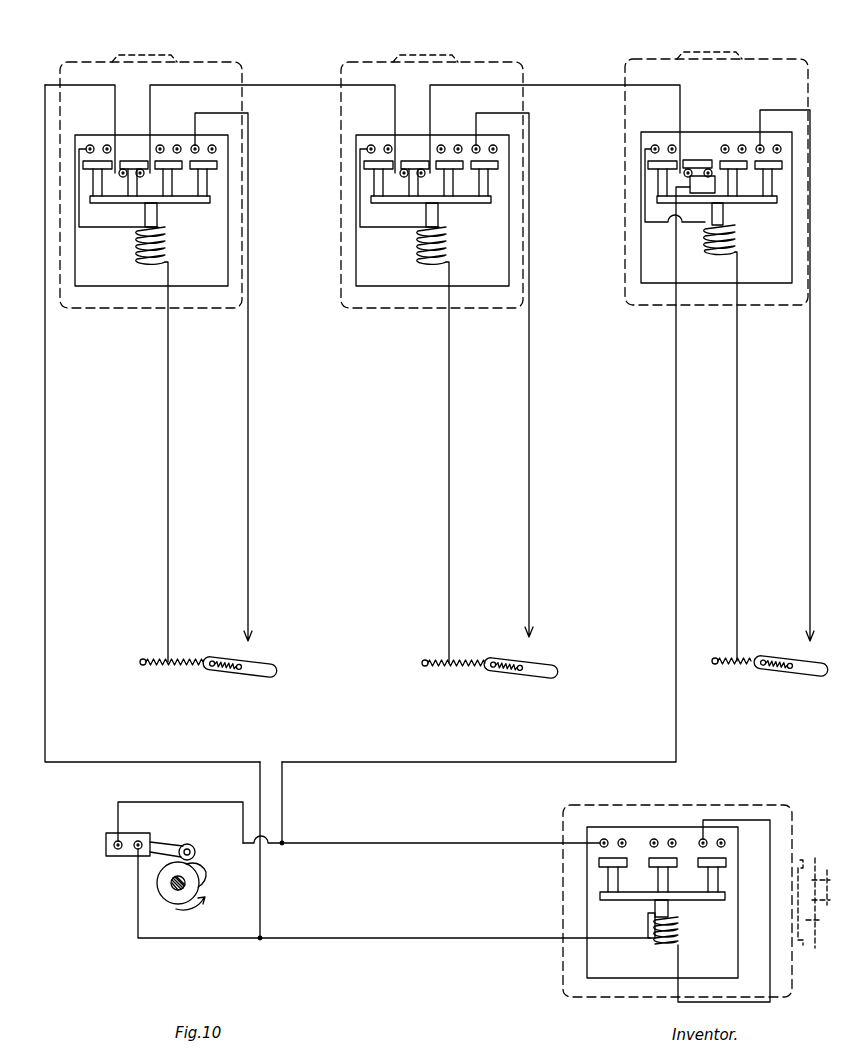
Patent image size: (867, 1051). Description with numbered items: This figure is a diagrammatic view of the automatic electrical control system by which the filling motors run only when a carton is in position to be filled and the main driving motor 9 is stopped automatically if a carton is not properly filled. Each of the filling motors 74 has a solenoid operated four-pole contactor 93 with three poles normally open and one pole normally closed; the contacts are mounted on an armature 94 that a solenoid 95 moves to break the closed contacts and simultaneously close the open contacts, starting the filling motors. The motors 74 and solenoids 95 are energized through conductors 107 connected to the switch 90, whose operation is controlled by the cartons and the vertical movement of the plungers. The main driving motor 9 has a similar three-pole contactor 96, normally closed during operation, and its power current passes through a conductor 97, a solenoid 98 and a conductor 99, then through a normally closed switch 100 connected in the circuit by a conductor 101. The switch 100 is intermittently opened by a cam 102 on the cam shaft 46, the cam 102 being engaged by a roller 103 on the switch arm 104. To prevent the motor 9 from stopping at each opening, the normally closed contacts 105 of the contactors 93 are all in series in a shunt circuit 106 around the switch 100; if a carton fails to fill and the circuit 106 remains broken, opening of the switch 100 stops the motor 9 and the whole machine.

The motor 74 is at (236, 60).
The contactor 93 is at (240, 230).
The normally closed contacts 105 is at (124, 168).
The armature 94 is at (153, 217).
The solenoid 95 is at (160, 240).
The conductor 107 is at (250, 462).
The switch 90 is at (277, 621).
The shunt circuit 106 is at (307, 760).
The conductor 101 is at (422, 830).
The conductor 99 is at (398, 938).
The switch 100 is at (122, 855).
The switch arm 104 is at (167, 843).
The roller 103 is at (195, 843).
The cam 102 is at (203, 880).
The cam shaft 46 is at (174, 887).
The main driving motor 9 is at (563, 982).
The contactor 96 is at (577, 958).
The solenoid 98 is at (657, 946).
The conductor 97 is at (770, 970).